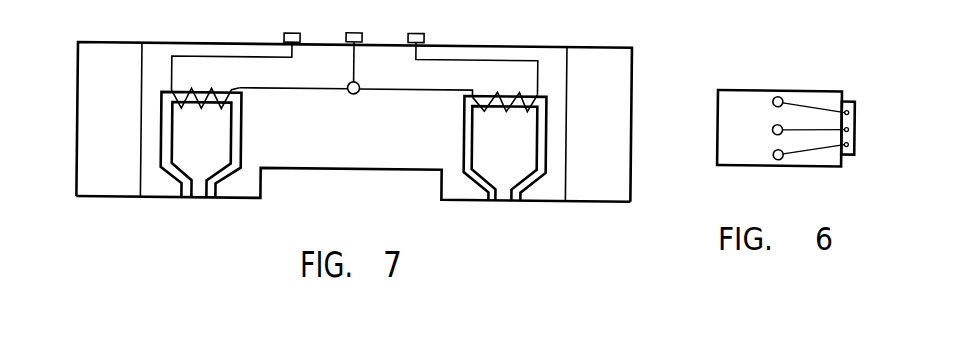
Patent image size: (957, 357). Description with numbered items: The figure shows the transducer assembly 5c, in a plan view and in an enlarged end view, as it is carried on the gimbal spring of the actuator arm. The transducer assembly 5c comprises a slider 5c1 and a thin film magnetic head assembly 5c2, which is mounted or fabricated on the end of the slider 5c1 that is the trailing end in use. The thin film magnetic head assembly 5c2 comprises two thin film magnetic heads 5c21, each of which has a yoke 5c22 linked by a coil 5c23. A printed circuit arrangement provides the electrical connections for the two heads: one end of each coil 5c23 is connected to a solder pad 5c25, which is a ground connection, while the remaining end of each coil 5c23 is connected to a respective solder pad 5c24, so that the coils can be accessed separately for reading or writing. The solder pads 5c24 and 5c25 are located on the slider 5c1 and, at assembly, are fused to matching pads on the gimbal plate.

In FIG. 7, the transducer assembly 5c is at (604, 196).
In FIG. 7, the slider 5c1 is at (592, 183).
In FIG. 6, the slider 5c1 is at (844, 162).
In FIG. 7, the thin film magnetic head assembly 5c2 is at (370, 124).
In FIG. 6, the thin film magnetic head assembly 5c2 is at (856, 140).
In FIG. 7, the thin film magnetic head 5c21 is at (203, 146).
In FIG. 7, the yoke 5c22 is at (244, 141).
In FIG. 7, the coil 5c23 is at (243, 111).
In FIG. 7, the solder pad 5c24 is at (292, 31).
In FIG. 6, the solder pad 5c24 is at (780, 97).
In FIG. 7, the solder pad 5c25 is at (354, 30).
In FIG. 6, the solder pad 5c25 is at (774, 126).